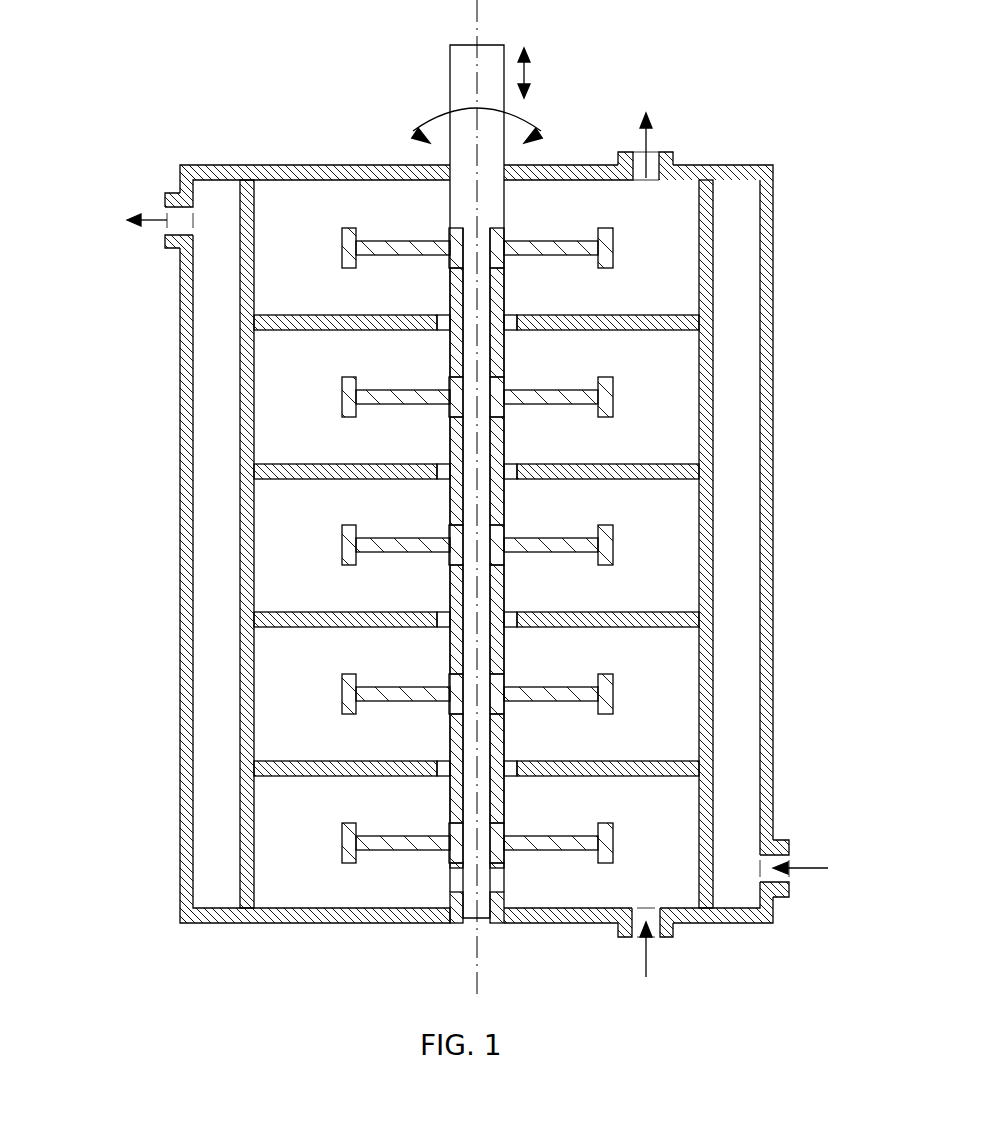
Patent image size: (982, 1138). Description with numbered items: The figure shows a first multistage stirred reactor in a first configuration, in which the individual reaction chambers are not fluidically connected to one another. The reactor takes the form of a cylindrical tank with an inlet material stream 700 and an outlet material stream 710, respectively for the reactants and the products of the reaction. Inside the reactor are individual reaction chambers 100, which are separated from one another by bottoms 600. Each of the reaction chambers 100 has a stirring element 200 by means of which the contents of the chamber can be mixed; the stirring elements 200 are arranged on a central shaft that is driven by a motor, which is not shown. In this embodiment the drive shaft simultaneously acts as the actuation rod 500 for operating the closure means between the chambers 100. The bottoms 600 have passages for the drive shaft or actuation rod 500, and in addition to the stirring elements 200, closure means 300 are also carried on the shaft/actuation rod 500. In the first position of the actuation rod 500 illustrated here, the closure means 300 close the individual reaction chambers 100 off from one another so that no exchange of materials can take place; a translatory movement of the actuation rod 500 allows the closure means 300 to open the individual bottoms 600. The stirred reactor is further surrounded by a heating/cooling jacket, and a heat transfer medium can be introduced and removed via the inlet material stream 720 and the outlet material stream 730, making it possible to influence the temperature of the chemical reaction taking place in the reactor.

The reaction chamber 100 is at (303, 216).
The stirring element 200 is at (613, 238).
The closure means 300 is at (513, 314).
The actuation rod 500 is at (450, 80).
The bottom 600 is at (350, 315).
The inlet material stream 700 is at (646, 962).
The outlet material stream 710 is at (646, 143).
The inlet material stream 720 is at (818, 868).
The outlet material stream 730 is at (162, 219).